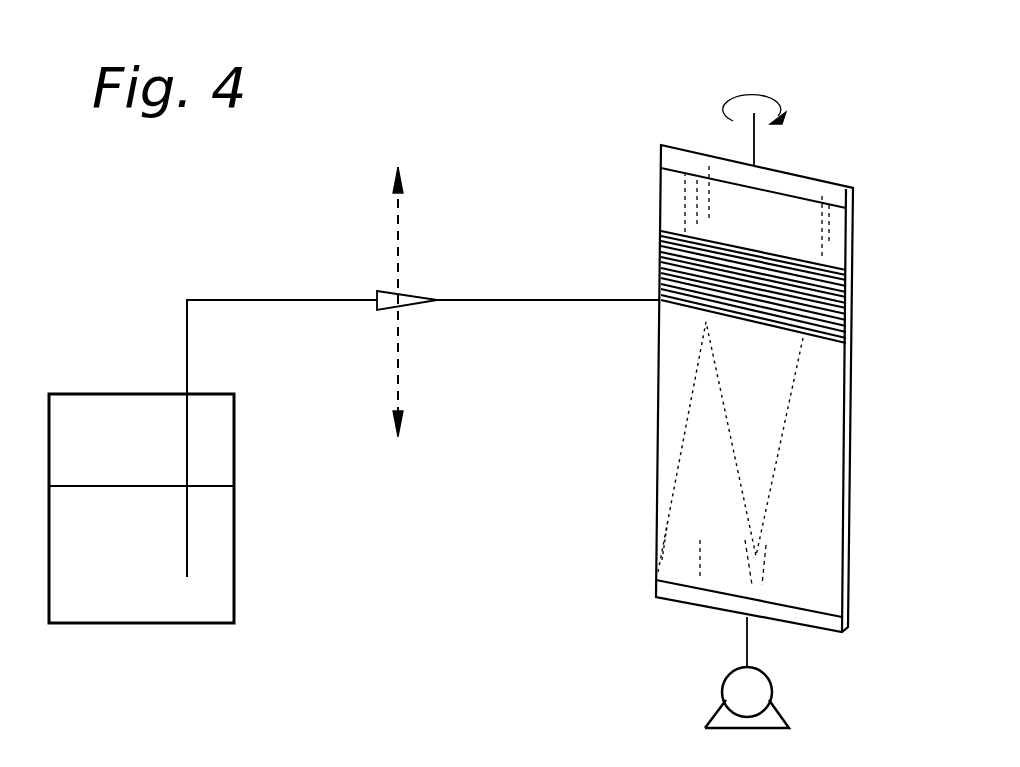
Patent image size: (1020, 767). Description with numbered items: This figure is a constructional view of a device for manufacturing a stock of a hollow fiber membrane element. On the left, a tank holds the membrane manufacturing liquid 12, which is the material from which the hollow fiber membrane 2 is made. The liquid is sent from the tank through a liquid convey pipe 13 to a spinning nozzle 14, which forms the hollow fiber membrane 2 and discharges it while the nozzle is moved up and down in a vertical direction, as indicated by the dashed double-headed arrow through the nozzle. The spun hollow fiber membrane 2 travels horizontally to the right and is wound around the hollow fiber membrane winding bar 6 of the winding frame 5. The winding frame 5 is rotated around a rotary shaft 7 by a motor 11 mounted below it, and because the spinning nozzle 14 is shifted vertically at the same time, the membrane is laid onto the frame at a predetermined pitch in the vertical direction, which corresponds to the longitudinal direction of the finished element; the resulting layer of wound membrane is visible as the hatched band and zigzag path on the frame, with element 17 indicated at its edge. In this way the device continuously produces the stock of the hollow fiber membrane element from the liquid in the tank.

The hollow fiber membrane 2 is at (492, 299).
The winding frame 5 is at (638, 182).
The hollow fiber membrane winding bar 6 is at (845, 453).
The rotary shaft 7 is at (746, 639).
The motor 11 is at (773, 684).
The membrane manufacturing liquid 12 is at (122, 623).
The liquid convey pipe 13 is at (216, 298).
The spinning nozzle 14 is at (388, 312).
The wound fiber layer 17 is at (847, 235).